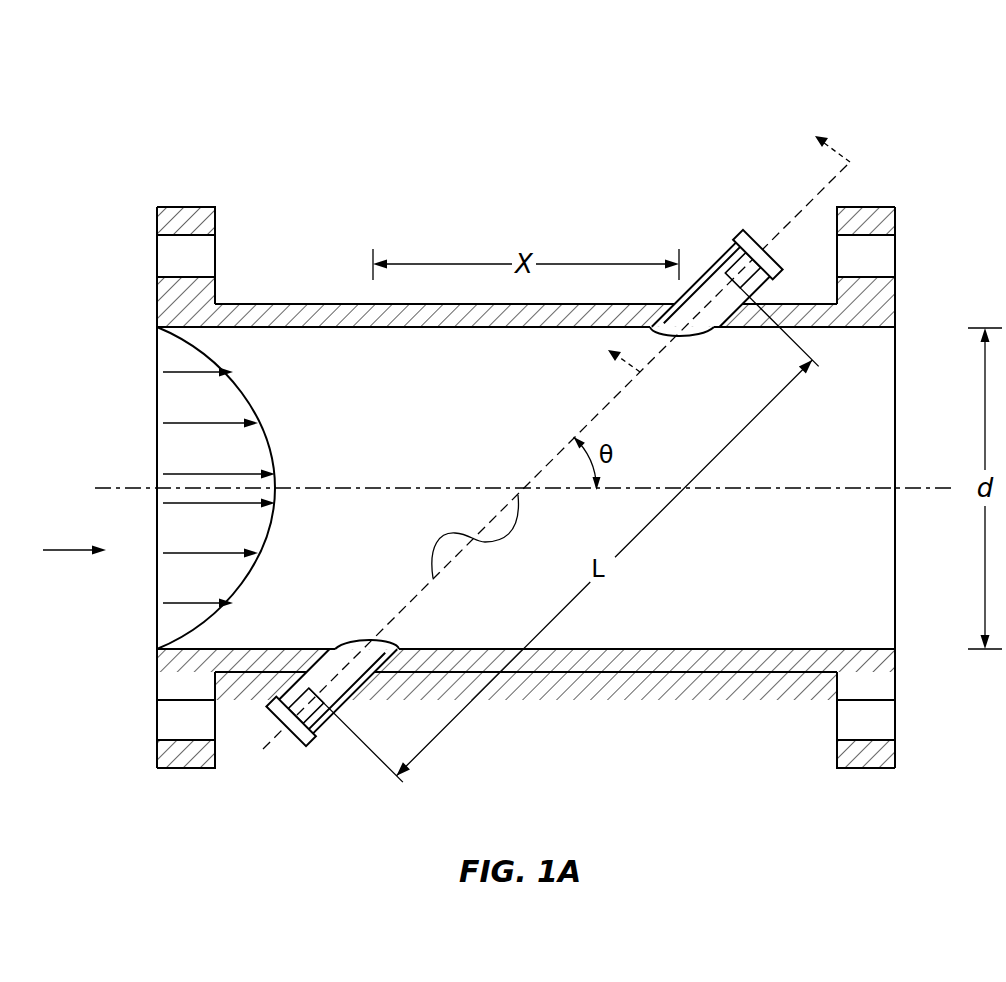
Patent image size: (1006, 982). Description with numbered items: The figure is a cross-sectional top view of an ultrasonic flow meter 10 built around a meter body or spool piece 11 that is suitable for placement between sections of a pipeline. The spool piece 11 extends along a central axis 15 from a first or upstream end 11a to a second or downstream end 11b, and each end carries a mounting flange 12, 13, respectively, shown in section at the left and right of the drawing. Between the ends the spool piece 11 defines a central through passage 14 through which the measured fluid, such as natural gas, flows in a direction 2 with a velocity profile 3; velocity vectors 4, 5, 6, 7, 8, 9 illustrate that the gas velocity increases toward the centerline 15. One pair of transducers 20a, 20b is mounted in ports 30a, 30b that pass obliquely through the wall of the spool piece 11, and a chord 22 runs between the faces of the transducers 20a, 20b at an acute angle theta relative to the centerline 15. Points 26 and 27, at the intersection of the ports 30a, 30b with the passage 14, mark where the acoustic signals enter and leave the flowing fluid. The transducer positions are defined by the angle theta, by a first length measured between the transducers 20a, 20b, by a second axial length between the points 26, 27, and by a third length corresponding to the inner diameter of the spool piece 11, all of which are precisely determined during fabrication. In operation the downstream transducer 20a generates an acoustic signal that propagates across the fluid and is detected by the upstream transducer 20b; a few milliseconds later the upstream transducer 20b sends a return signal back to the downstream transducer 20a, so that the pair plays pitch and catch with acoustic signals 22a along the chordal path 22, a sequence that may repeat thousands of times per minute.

The flow direction 2 is at (76, 553).
The velocity profile 3 is at (252, 390).
The velocity vector 4 is at (163, 372).
The velocity vector 5 is at (163, 423).
The velocity vector 6 is at (163, 474).
The velocity vector 7 is at (163, 503).
The velocity vector 8 is at (163, 553).
The velocity vector 9 is at (163, 603).
The ultrasonic flow meter 10 is at (539, 427).
The spool piece 11 is at (728, 672).
The first end 11a is at (157, 762).
The second end 11b is at (895, 222).
The mounting flange 12 is at (186, 206).
The mounting flange 13 is at (842, 770).
The central through passage 14 is at (862, 386).
The central axis 15 is at (918, 490).
The downstream transducer 20a is at (752, 237).
The upstream transducer 20b is at (298, 745).
The chord 22 is at (614, 398).
The acoustic signals 22a is at (452, 533).
The point 26 is at (682, 334).
The point 27 is at (365, 640).
The port 30a is at (710, 260).
The port 30b is at (360, 697).